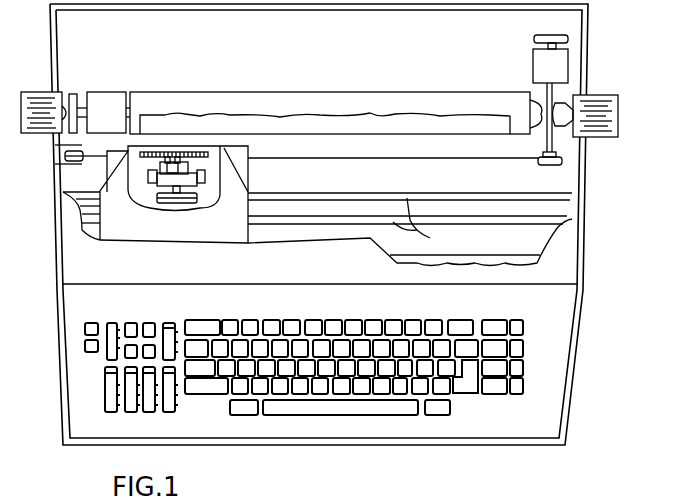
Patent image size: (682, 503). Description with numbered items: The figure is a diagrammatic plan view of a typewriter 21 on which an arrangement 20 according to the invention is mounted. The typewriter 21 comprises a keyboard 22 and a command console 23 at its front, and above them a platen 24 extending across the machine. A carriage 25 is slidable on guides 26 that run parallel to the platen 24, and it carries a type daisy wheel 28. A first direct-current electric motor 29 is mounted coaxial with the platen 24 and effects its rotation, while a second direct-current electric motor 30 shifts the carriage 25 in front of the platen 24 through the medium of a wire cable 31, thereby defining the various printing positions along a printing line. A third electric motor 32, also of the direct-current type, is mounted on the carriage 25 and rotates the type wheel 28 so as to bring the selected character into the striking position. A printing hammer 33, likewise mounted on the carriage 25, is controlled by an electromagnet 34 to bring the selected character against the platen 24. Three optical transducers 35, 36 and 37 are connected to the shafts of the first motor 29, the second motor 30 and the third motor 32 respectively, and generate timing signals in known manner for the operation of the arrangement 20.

The arrangement 20 is at (471, 258).
The typewriter 21 is at (601, 297).
The keyboard 22 is at (482, 408).
The command console 23 is at (91, 382).
The platen 24 is at (400, 100).
The carriage 25 is at (240, 158).
The guides 26 is at (424, 223).
The type daisy wheel 28 is at (177, 157).
The first direct-current electric motor 29 is at (112, 98).
The second direct-current electric motor 30 is at (533, 63).
The wire cable 31 is at (443, 156).
The third electric motor 32 is at (160, 180).
The printing hammer 33 is at (190, 164).
The electromagnet 34 is at (202, 181).
The optical transducer 35 is at (72, 94).
The optical transducer 36 is at (543, 34).
The optical transducer 37 is at (175, 203).